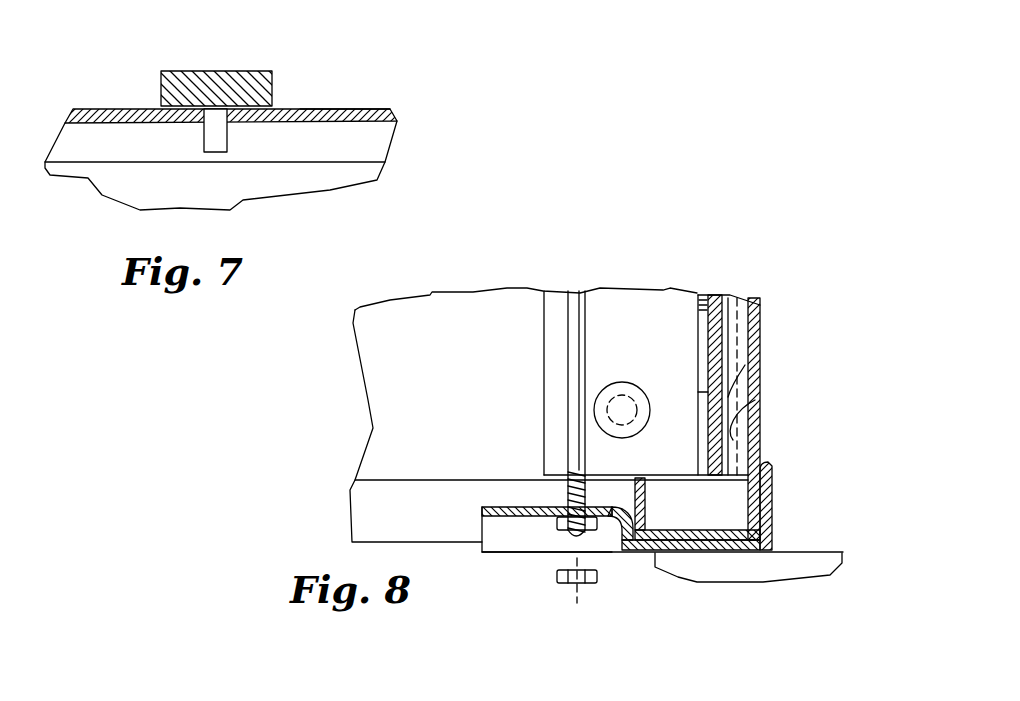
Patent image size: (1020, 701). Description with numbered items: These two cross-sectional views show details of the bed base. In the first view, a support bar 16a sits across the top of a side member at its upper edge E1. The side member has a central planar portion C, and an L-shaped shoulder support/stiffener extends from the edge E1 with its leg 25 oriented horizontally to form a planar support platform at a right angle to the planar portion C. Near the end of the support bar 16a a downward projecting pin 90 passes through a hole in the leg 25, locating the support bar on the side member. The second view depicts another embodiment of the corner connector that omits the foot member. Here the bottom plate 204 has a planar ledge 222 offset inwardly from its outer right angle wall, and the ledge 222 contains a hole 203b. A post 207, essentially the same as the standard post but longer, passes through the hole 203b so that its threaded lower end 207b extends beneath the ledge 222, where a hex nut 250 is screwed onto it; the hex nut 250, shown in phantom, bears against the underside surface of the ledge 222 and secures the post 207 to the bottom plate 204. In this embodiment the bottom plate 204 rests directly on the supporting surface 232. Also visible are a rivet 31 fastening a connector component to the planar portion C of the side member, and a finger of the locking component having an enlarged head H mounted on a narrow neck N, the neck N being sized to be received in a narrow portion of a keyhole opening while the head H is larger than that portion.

In FIG. 7, the support bar 16a is at (148, 80).
In FIG. 7, the leg 25 is at (97, 113).
In FIG. 7, the edge E1 is at (347, 107).
In FIG. 7, the planar portion C is at (174, 193).
In FIG. 7, the pin 90 is at (223, 138).
In FIG. 8, the post 207 is at (568, 322).
In FIG. 8, the rivet 31 is at (622, 382).
In FIG. 8, the head H is at (745, 365).
In FIG. 8, the neck N is at (755, 400).
In FIG. 8, the ledge 222 is at (482, 530).
In FIG. 8, the hole 203b is at (570, 507).
In FIG. 8, the hex nut 250 is at (553, 528).
In FIG. 8, the threaded lower end 207b is at (587, 537).
In FIG. 8, the bottom plate 204 is at (638, 567).
In FIG. 8, the supporting surface 232 is at (803, 550).